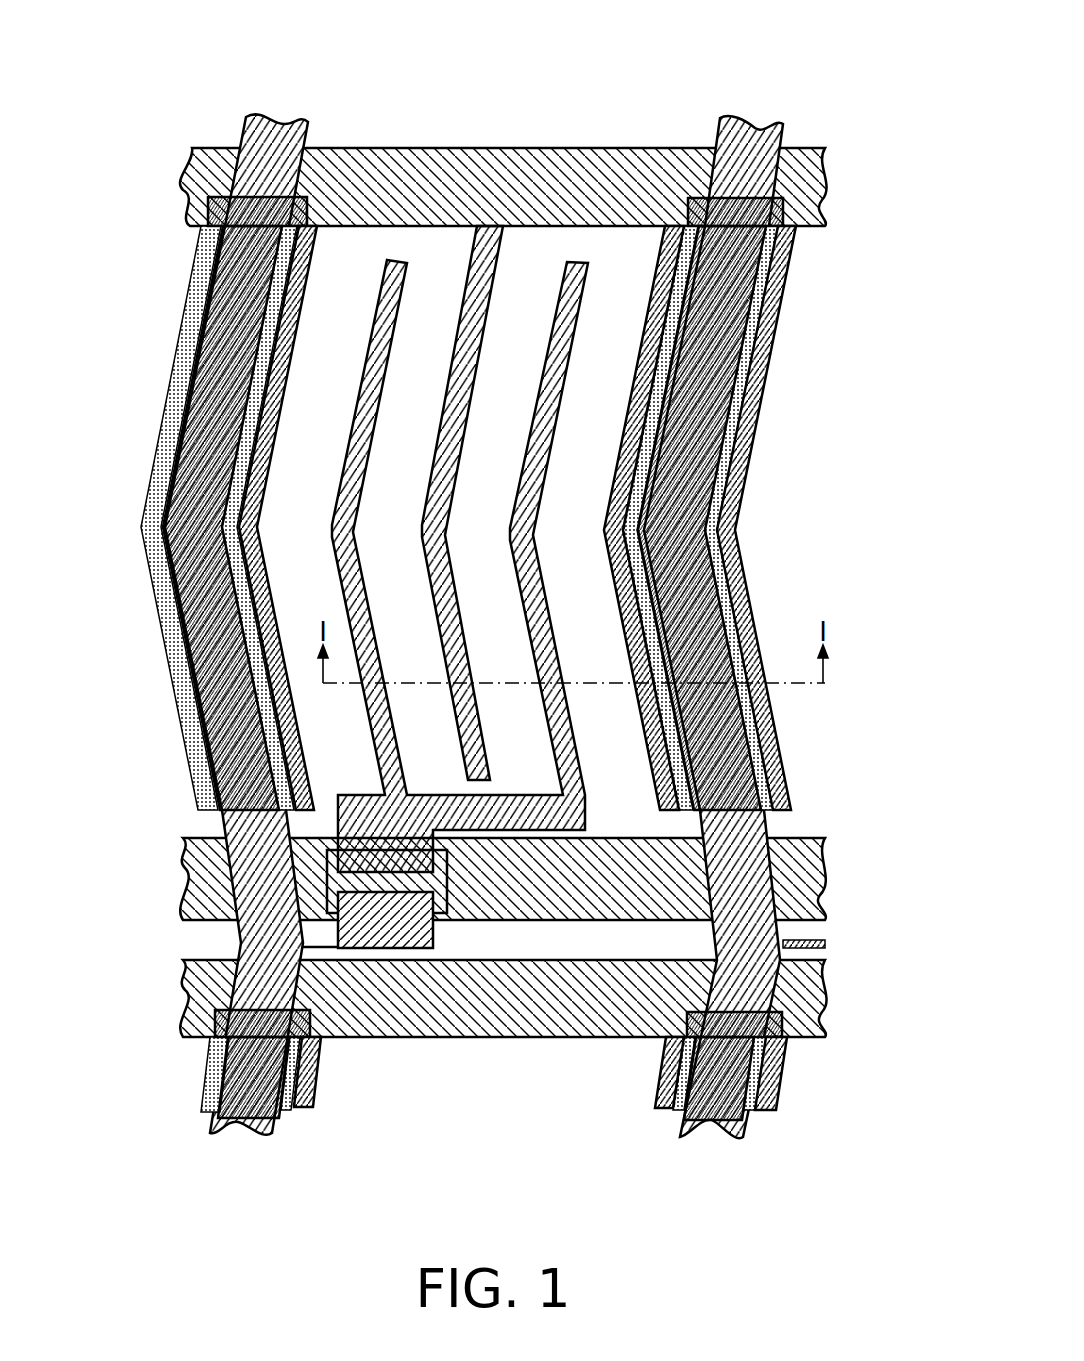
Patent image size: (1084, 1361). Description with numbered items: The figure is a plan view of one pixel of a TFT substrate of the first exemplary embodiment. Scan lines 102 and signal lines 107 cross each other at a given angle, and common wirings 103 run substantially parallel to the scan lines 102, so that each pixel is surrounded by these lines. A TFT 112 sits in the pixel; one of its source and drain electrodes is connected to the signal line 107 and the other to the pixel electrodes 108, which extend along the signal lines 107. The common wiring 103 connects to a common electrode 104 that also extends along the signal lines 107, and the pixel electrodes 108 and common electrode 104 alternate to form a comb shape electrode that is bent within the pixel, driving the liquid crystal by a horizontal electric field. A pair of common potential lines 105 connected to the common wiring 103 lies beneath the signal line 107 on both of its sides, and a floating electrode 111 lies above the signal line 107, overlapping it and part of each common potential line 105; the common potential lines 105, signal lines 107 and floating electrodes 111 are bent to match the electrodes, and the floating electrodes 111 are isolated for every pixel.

The scan line 102 is at (828, 880).
The common wiring 103 is at (828, 183).
The common electrode 104 is at (425, 535).
The common potential line 105 is at (783, 335).
The signal line 107 is at (290, 122).
The pixel electrode 108 is at (345, 465).
The floating electrode 111 is at (197, 332).
The TFT 112 is at (335, 875).